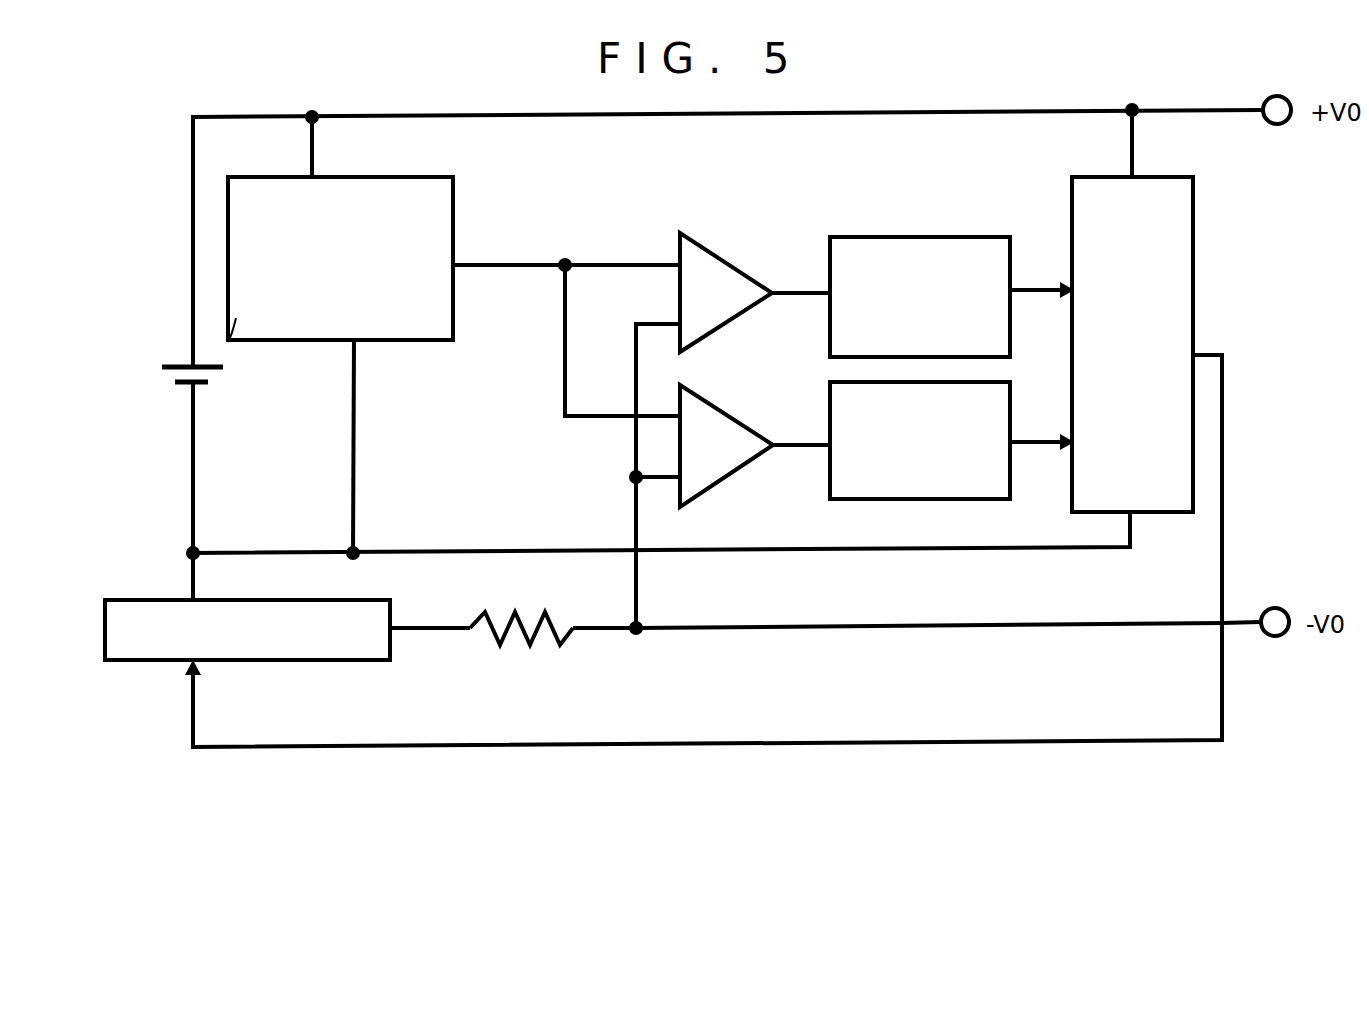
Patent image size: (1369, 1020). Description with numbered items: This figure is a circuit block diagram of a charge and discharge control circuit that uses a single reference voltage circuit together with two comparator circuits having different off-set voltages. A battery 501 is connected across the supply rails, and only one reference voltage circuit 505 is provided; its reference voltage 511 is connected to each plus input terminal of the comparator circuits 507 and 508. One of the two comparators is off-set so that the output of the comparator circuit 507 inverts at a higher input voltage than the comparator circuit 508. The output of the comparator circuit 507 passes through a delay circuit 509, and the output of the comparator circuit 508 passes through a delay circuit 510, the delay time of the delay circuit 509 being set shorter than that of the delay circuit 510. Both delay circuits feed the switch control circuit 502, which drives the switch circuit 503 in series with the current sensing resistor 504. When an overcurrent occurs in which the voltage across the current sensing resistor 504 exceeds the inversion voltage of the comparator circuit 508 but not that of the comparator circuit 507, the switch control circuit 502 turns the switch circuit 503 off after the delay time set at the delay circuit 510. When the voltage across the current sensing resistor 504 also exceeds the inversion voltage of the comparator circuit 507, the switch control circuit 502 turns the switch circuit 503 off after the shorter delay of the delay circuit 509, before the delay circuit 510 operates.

The battery 501 is at (171, 352).
The switch control circuit 502 is at (1193, 253).
The switch circuit 503 is at (315, 663).
The current sensing resistor 504 is at (515, 653).
The reference voltage circuit 505 is at (457, 210).
The comparator circuit 507 is at (678, 248).
The comparator circuit 508 is at (730, 475).
The delay circuit 509 is at (906, 237).
The delay circuit 510 is at (910, 505).
The reference voltage 511 is at (509, 244).